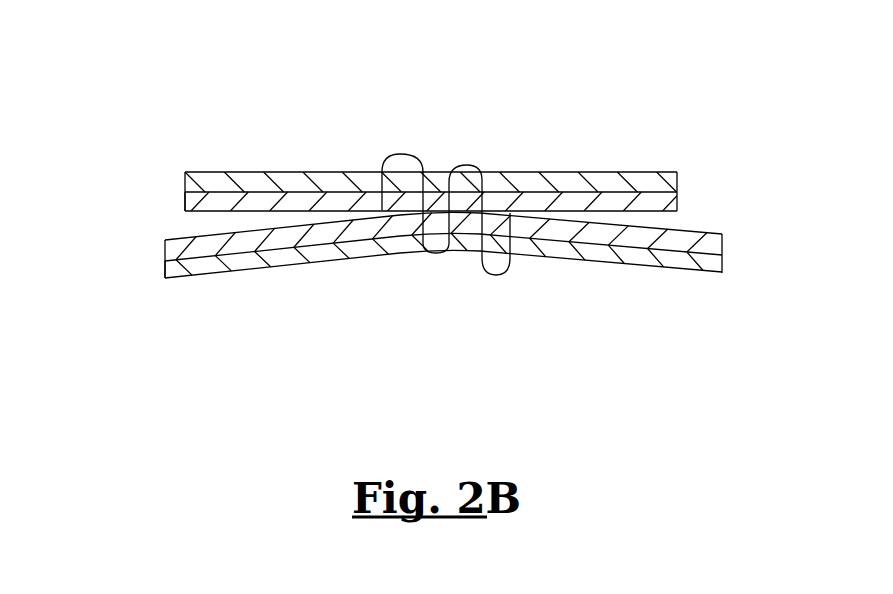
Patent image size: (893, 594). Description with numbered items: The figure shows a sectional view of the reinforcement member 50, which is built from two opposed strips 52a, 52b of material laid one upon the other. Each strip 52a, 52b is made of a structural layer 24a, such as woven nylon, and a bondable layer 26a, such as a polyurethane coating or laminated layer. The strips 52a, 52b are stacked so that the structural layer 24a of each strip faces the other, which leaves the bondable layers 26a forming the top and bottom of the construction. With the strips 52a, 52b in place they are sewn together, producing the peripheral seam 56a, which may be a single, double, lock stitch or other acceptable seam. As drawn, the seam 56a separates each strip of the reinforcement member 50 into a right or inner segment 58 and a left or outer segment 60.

The reinforcement member 50 is at (420, 222).
The strip of opposed material 52a is at (277, 162).
The strip of opposed material 52b is at (248, 278).
The structural layer 24a is at (182, 202).
The bondable layer 26a is at (230, 172).
The peripheral seam 56a is at (402, 152).
The right (or inner) segment 58 is at (673, 223).
The left (or outer) segment 60 is at (190, 226).